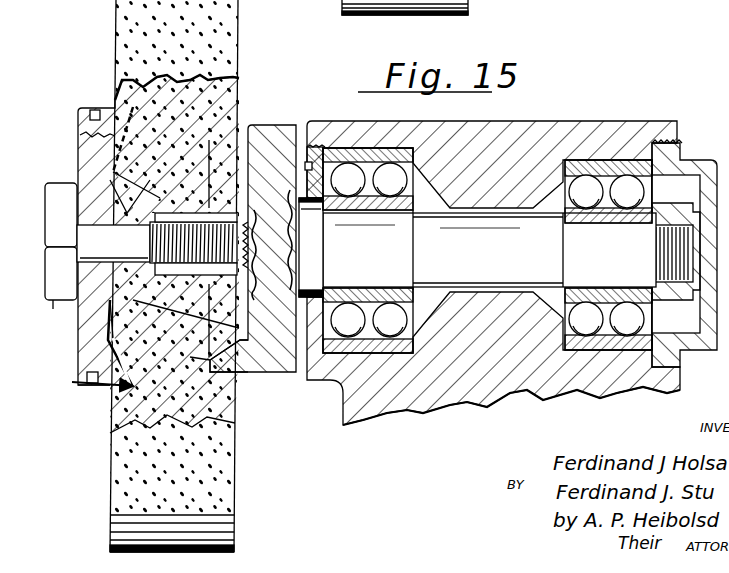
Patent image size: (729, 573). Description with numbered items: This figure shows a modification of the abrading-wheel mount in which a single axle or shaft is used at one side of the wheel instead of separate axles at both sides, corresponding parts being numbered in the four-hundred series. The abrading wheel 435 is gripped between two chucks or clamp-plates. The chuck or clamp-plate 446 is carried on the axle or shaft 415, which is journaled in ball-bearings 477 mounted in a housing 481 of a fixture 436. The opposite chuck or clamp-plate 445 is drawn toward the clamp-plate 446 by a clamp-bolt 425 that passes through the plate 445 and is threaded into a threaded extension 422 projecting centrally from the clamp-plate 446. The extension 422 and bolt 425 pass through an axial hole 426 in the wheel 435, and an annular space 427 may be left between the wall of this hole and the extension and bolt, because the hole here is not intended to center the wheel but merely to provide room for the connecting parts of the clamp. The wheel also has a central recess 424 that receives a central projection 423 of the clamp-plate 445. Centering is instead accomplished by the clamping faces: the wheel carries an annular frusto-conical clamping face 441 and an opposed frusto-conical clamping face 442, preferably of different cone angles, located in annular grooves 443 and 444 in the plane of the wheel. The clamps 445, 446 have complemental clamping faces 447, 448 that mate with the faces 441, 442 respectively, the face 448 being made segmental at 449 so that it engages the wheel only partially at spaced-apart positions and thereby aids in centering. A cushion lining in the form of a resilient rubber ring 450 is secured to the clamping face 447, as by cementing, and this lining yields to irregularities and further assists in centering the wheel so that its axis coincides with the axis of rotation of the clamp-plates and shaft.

The shaft 415 is at (405, 247).
The threaded extension 422 is at (146, 229).
The central projection 423 is at (76, 216).
The central recess 424 is at (78, 342).
The clamp-bolt 425 is at (51, 313).
The axial hole 426 is at (157, 193).
The annular space 427 is at (113, 298).
The wheel 435 is at (230, 49).
The fixture 436 is at (658, 121).
The annular clamping face 441 is at (110, 394).
The opposed annular clamping face 442 is at (228, 122).
The annular groove 443 is at (115, 103).
The annular groove 444 is at (227, 113).
The chuck or clamp-plate 445 is at (84, 384).
The chuck or clamp-plate 446 is at (258, 365).
The complemental clamping face 447 is at (78, 135).
The complemental clamping face 448 is at (240, 396).
The segmental portion 449 is at (237, 385).
The resilient rubber ring 450 is at (110, 405).
The ball-bearings 477 is at (347, 312).
The housing 481 is at (513, 390).